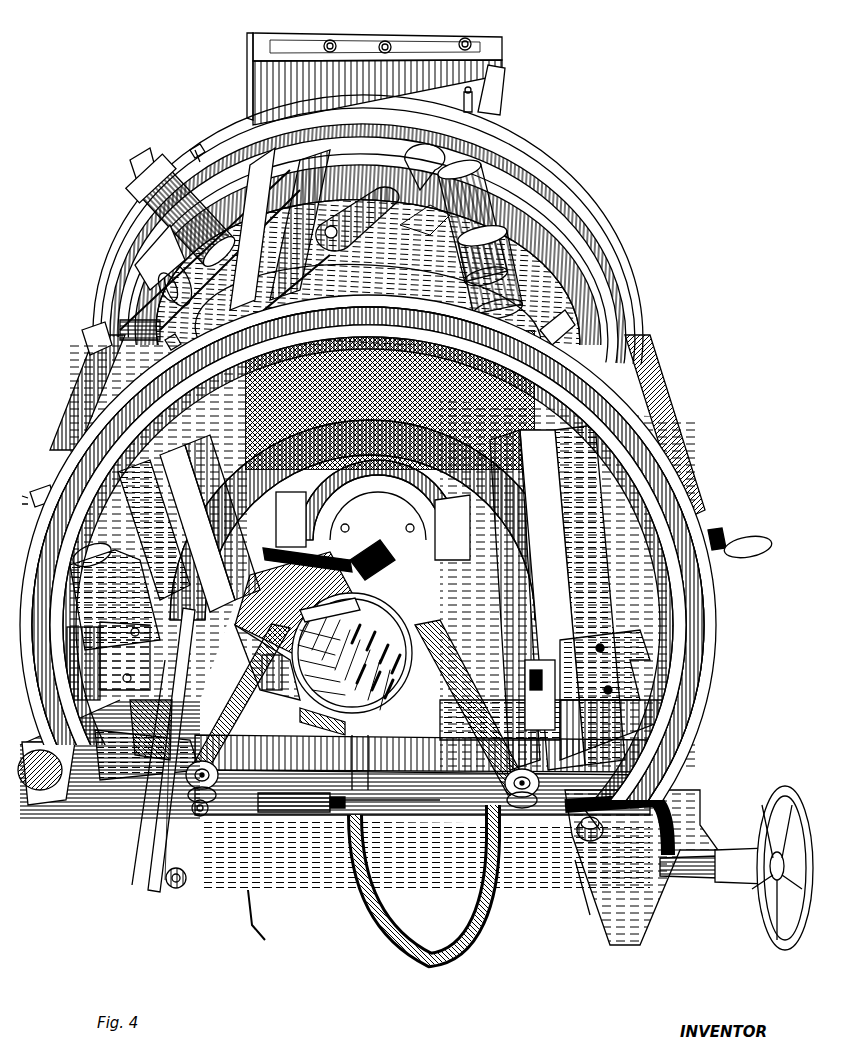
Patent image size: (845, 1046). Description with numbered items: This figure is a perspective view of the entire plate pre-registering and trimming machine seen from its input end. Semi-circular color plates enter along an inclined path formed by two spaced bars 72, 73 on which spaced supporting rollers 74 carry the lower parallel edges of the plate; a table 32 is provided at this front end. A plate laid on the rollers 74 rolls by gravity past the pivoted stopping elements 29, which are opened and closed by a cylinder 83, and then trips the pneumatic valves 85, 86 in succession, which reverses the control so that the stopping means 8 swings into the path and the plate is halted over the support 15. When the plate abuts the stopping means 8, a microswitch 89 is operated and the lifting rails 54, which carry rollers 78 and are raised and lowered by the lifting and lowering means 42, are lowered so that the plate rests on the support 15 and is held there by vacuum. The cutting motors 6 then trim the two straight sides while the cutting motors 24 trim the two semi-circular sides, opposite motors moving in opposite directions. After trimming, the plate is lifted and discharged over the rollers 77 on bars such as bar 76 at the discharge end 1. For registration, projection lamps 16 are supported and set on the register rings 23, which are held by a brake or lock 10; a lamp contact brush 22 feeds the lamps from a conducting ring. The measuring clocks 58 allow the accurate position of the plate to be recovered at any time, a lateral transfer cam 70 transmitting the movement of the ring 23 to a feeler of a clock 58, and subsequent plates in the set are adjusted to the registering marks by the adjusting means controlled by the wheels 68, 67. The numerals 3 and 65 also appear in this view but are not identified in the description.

The discharge end 1 is at (290, 165).
The housing 3 is at (500, 37).
The cutting motor 6 is at (497, 636).
The stopping means 8 is at (348, 212).
The brake or lock for the register rings 10 is at (140, 165).
The support 15 is at (420, 265).
The projection lamp 16 is at (150, 207).
The lamp contact brush 22 is at (195, 150).
The register ring 23 is at (553, 143).
The cutting motor 24 is at (323, 626).
The pivoted stopping element 29 is at (245, 668).
The table 32 is at (261, 931).
The means for lifting and lowering the rails 42 is at (180, 530).
The lifting rail 54 is at (268, 505).
The measuring clock 58 is at (148, 314).
The plate 65 is at (113, 625).
The wheel 67 is at (42, 492).
The wheel 68 is at (760, 815).
The lateral transfer cam 70 is at (50, 705).
The bar 72 is at (560, 905).
The bar 73 is at (145, 884).
The supporting roller 74 is at (182, 882).
The bar 76 is at (282, 180).
The roller 77 is at (320, 170).
The roller 78 is at (490, 600).
The cylinder 83 is at (292, 825).
The pneumatic valve 85 is at (545, 705).
The pneumatic valve 86 is at (535, 690).
The microswitch 89 is at (338, 235).